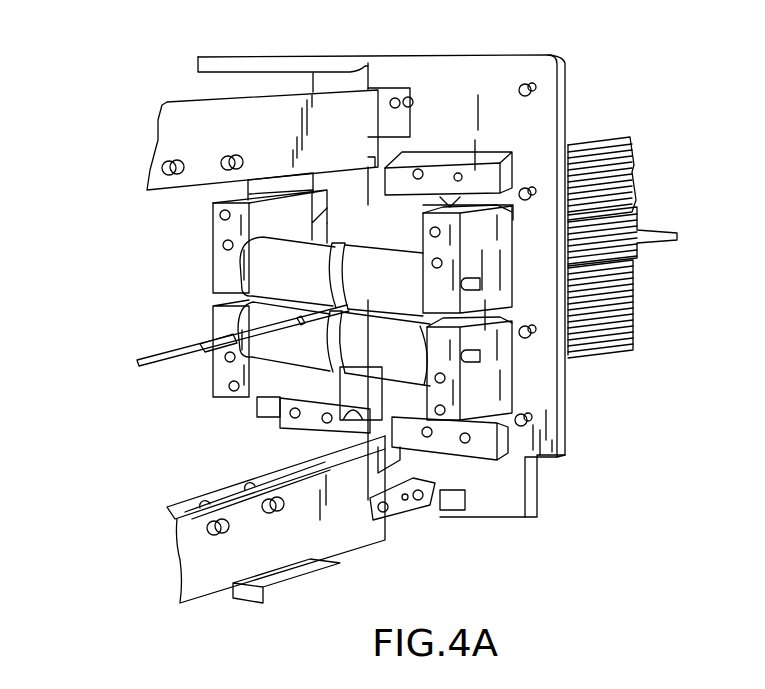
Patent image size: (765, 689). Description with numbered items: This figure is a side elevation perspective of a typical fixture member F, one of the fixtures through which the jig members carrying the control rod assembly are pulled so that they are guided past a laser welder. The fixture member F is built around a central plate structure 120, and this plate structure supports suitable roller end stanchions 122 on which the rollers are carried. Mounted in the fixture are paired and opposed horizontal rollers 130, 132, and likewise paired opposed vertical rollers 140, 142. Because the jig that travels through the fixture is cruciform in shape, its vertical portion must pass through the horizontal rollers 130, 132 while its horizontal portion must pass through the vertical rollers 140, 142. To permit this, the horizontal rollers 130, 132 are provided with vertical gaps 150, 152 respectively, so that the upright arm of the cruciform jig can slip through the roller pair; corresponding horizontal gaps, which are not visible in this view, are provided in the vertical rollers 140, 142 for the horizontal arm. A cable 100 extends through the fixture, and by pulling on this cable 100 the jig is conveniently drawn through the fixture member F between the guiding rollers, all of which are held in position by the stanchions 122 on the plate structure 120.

The fixture member F is at (448, 65).
The cable 100 is at (157, 357).
The central plate structure 120 is at (235, 385).
The roller end stanchions 122 is at (212, 240).
The horizontal roller 130 is at (302, 281).
The horizontal roller 132 is at (307, 359).
The vertical roller 140 is at (373, 200).
The vertical roller 142 is at (427, 203).
The vertical gap 150 is at (405, 299).
The vertical gap 152 is at (398, 364).